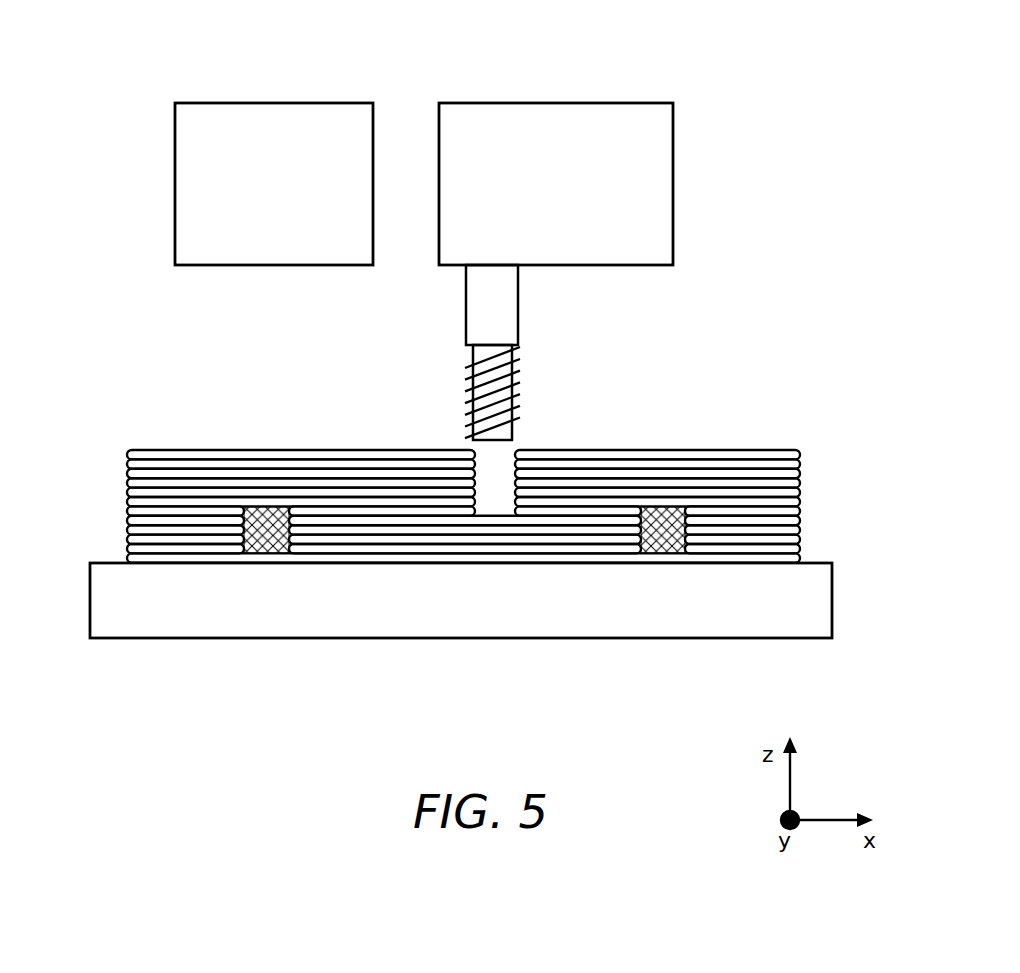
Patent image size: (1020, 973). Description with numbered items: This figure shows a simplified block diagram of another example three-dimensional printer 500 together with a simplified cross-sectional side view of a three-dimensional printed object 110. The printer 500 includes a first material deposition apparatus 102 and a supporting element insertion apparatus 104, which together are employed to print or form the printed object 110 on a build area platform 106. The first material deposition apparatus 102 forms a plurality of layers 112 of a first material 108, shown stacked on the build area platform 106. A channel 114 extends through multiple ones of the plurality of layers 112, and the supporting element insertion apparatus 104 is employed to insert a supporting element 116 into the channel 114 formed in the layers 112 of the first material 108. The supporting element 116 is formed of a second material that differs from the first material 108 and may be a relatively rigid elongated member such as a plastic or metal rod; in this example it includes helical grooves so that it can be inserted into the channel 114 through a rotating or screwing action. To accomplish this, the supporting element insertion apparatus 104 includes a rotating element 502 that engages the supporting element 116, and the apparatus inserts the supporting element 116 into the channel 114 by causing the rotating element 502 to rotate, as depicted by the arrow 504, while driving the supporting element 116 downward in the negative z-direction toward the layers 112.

The 3D printer 500 is at (419, 26).
The first material deposition apparatus 102 is at (255, 194).
The supporting element insertion apparatus 104 is at (537, 194).
The build area platform 106 is at (237, 638).
The first material 108 is at (127, 483).
The 3D printed object 110 is at (462, 541).
The plurality of layers 112 is at (800, 450).
The channel 114 is at (497, 517).
The supporting element 116 is at (473, 407).
The rotating element 502 is at (466, 315).
The arrow 504 is at (542, 290).